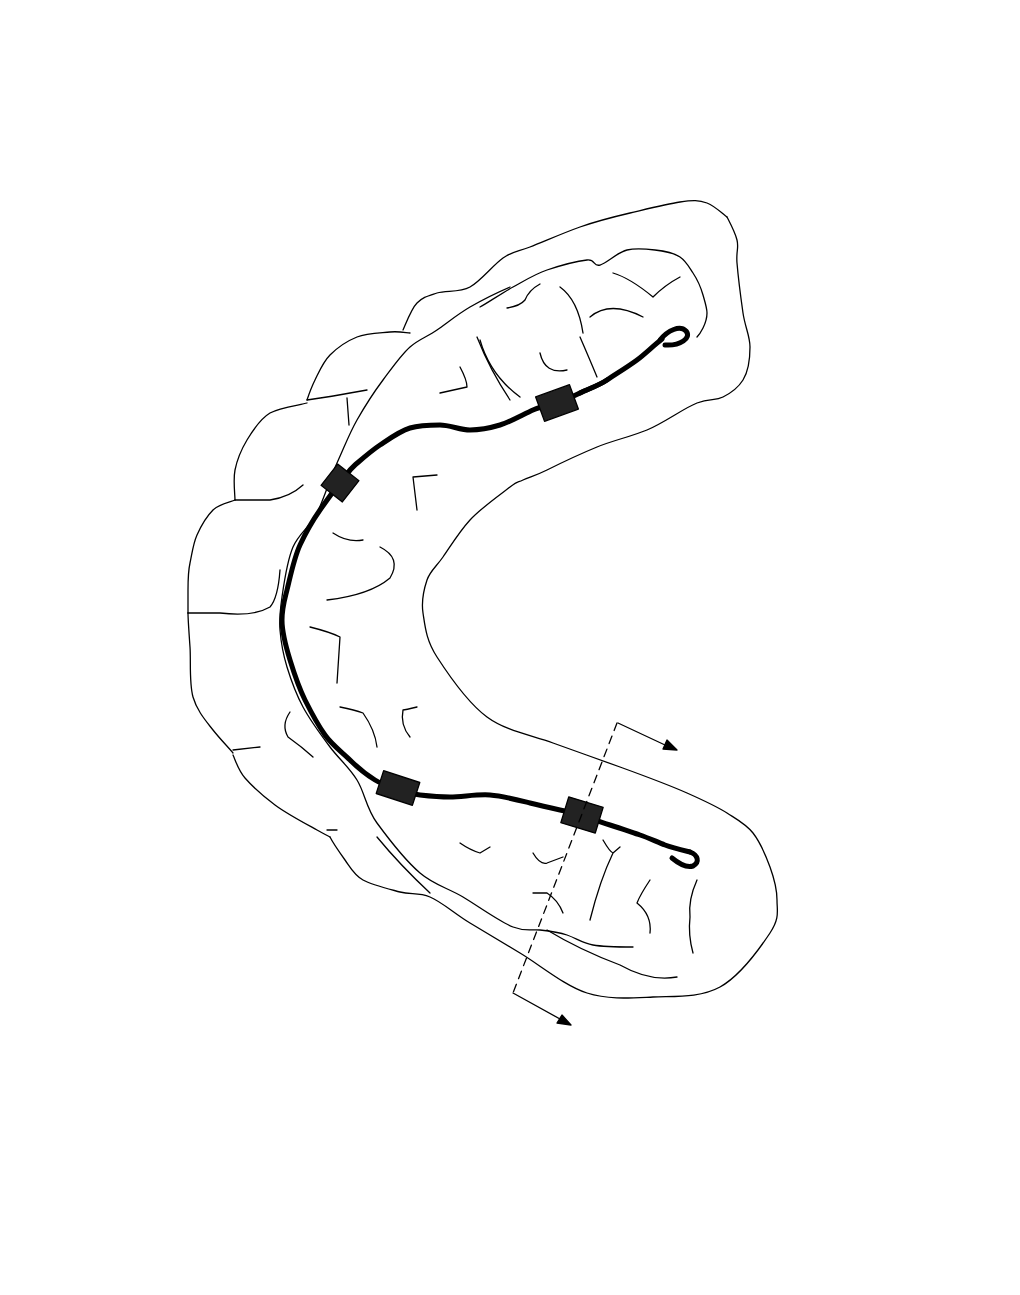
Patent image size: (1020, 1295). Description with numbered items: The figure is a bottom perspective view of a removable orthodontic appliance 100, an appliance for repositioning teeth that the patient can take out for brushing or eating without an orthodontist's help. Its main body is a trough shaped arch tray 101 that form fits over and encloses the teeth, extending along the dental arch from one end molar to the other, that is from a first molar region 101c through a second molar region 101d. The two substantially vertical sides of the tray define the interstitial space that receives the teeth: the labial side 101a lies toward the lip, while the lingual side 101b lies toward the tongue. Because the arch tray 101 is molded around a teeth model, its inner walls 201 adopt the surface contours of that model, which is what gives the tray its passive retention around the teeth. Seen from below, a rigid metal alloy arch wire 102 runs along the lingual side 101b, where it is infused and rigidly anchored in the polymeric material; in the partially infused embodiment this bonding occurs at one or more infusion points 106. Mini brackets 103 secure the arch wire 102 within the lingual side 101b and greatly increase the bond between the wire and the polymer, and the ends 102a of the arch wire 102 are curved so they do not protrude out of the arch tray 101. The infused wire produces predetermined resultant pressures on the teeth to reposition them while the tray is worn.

The removable orthodontic appliance 100 is at (686, 92).
The arch tray 101 is at (754, 228).
The labial side 101a is at (180, 657).
The lingual side 101b is at (414, 584).
The first molar region 101c is at (730, 912).
The second molar region 101d is at (625, 256).
The arch wire 102 is at (468, 784).
The ends of the arch wire 102a is at (672, 359).
The mini bracket 103 is at (559, 443).
The infusion point 106 is at (592, 402).
The inner walls 201 is at (671, 302).